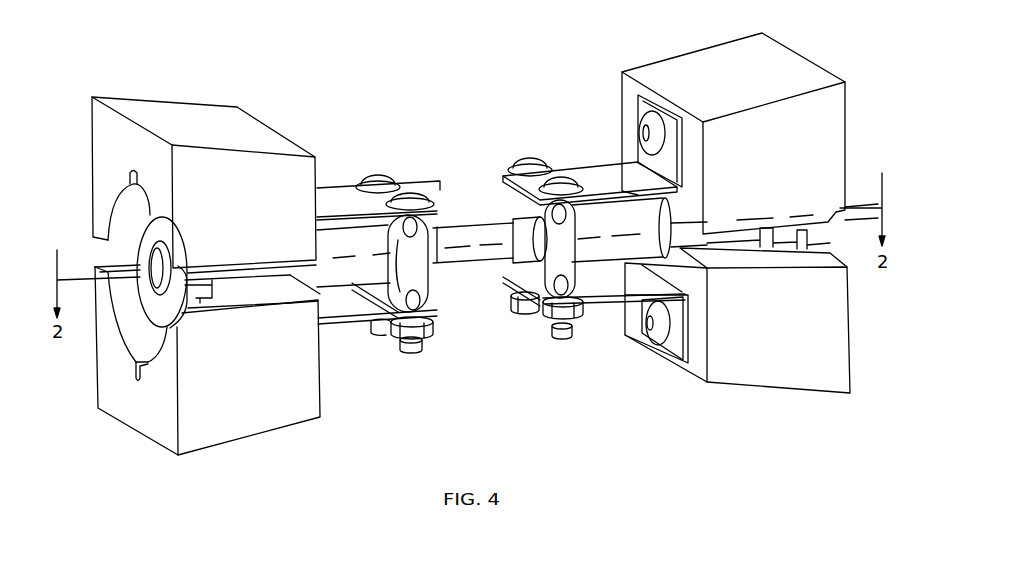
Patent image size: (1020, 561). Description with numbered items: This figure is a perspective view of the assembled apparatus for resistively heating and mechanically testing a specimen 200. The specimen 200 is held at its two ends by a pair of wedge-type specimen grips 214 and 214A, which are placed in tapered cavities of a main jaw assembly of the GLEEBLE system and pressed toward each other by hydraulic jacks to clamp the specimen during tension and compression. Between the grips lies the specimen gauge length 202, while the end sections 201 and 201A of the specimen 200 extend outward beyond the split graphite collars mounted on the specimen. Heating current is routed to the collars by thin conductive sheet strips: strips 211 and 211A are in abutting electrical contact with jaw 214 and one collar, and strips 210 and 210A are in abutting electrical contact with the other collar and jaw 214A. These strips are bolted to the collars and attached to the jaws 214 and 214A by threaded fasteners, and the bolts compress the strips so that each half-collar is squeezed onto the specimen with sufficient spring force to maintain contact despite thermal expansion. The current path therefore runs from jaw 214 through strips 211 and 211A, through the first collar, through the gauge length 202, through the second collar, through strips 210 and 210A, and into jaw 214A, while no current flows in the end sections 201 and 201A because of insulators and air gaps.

The specimen 200 is at (487, 270).
The end section 201 is at (630, 224).
The end section 201A is at (366, 252).
The specimen gauge length 202 is at (477, 222).
The conductive sheet strip 210 is at (343, 330).
The conductive sheet strip 210A is at (330, 183).
The conductive sheet strip 211 is at (615, 307).
The conductive sheet strip 211A is at (592, 160).
The specimen grip 214 is at (779, 364).
The specimen grip 214A is at (255, 406).